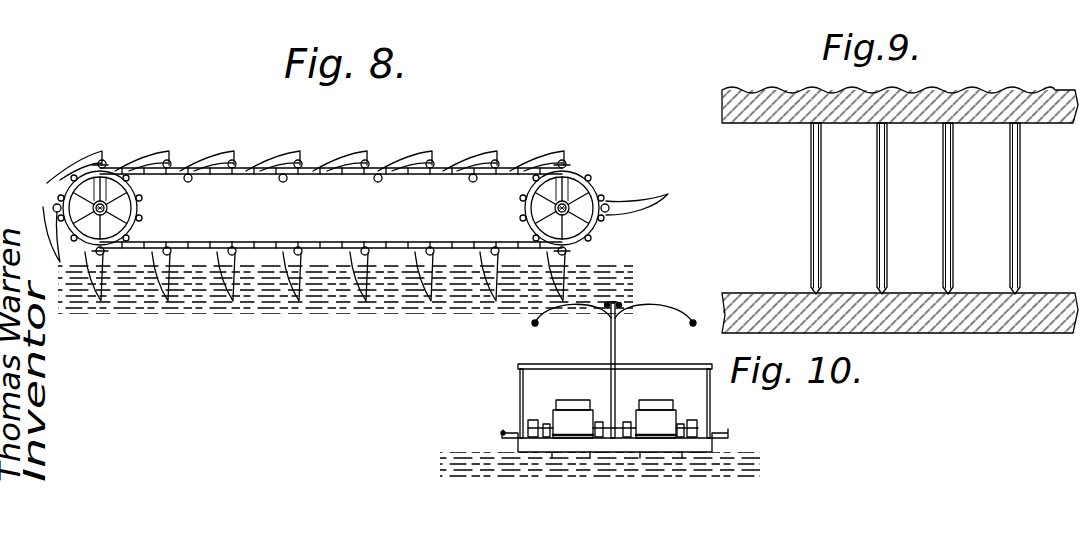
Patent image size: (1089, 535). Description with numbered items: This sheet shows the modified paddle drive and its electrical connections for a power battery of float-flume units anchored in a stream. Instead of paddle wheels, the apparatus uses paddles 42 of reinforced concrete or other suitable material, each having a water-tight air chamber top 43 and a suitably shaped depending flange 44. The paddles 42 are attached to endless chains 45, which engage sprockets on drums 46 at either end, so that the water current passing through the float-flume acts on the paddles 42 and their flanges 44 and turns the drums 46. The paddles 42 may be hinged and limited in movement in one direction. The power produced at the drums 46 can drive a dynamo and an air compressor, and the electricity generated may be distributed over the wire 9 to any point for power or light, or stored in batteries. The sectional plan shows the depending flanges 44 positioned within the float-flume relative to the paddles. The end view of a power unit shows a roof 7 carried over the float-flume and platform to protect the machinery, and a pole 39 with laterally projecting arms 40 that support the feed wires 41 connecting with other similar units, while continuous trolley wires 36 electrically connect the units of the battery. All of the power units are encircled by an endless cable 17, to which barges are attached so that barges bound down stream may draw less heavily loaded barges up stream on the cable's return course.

In FIG. 10, the roof 7 is at (647, 364).
In FIG. 8, the wire 9 is at (222, 296).
In FIG. 10, the endless cable 17 is at (504, 432).
In FIG. 8, the trolley wires 36 is at (206, 13).
In FIG. 10, the trolley wires 36 is at (697, 300).
In FIG. 10, the poles 39 is at (611, 346).
In FIG. 10, the laterally projecting arms 40 is at (614, 325).
In FIG. 10, the feed wires 41 is at (623, 303).
In FIG. 8, the paddles 42 is at (203, 157).
In FIG. 10, the paddles 42 is at (575, 393).
In FIG. 8, the water-tight air chamber top 43 is at (310, 154).
In FIG. 8, the depending flange 44 is at (167, 301).
In FIG. 9, the depending flange 44 is at (876, 224).
In FIG. 8, the endless chains 45 is at (330, 228).
In FIG. 8, the drums 46 is at (138, 206).